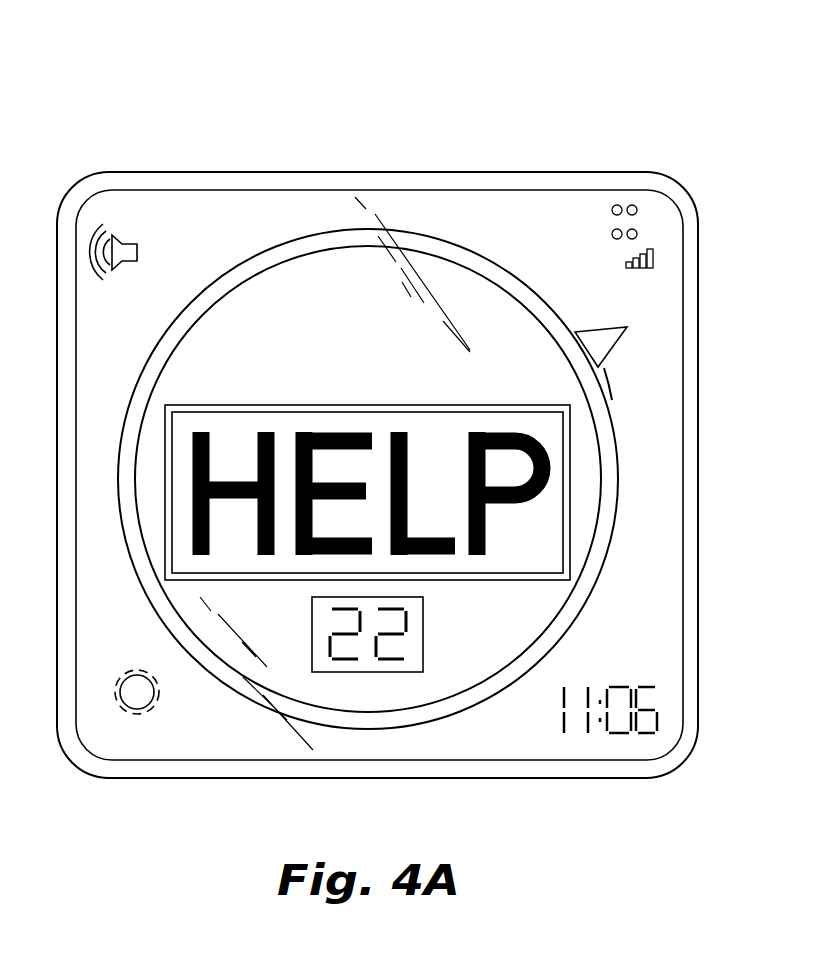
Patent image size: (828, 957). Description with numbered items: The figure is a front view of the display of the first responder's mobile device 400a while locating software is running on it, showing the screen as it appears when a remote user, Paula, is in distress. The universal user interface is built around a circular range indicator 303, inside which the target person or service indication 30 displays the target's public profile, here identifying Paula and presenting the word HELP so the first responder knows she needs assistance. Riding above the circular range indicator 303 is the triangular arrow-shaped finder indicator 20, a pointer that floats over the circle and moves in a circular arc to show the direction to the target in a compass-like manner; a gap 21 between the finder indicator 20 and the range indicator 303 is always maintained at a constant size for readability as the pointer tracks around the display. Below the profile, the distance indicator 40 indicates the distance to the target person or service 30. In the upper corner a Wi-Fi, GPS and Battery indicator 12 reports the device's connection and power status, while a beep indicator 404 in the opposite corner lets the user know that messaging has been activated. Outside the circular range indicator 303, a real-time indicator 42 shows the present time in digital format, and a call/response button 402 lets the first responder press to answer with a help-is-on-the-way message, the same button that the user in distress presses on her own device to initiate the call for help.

The first responder's mobile device 400a is at (378, 95).
The beep indicator 404 is at (118, 237).
The target person or service indication 30 is at (283, 300).
The circular range indicator 303 is at (452, 252).
The Wi-Fi, GPS and Battery indicator 12 is at (655, 210).
The triangular arrow-shaped finder indicator 20 is at (620, 340).
The gap 21 is at (600, 378).
The distance indicator 40 is at (357, 682).
The real-time indicator 42 is at (550, 722).
The call/response button 402 is at (122, 706).